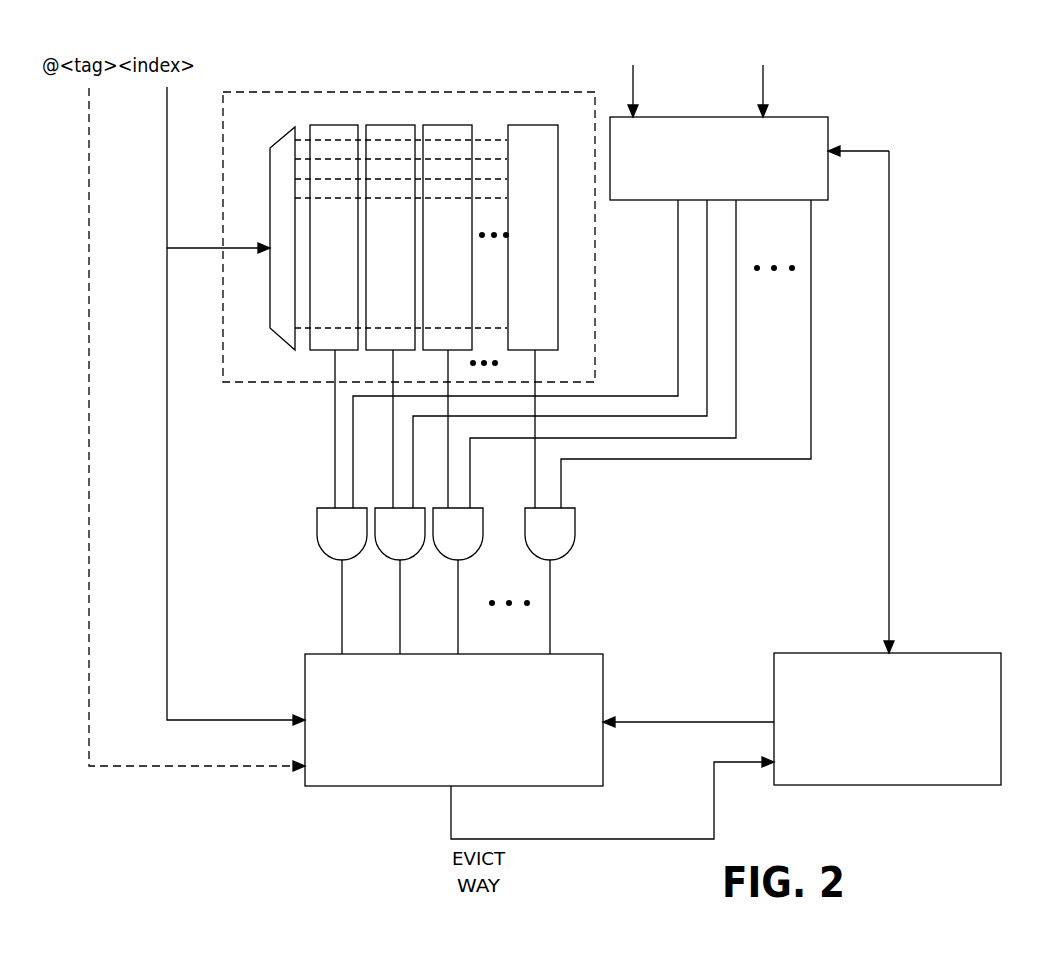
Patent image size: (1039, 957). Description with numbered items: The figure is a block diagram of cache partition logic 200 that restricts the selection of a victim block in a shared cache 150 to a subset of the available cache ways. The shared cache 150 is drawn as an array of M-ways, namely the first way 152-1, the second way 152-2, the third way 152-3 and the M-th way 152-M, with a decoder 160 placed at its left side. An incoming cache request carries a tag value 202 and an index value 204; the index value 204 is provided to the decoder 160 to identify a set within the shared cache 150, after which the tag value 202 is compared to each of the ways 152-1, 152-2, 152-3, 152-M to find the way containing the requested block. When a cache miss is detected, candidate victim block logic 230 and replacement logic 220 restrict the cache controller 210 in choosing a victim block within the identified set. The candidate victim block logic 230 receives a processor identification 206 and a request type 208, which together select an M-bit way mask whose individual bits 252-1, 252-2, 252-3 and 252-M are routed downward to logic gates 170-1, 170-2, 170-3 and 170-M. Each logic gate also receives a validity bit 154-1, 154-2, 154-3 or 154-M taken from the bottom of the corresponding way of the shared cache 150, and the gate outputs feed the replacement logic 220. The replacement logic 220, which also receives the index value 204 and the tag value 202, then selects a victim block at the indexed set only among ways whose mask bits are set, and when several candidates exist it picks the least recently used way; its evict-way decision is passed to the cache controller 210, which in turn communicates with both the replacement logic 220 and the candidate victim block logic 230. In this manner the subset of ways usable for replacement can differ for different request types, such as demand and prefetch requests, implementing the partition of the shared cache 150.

The shared cache 150 is at (265, 375).
The way W1 152-1 is at (329, 125).
The way W2 152-2 is at (389, 125).
The way W3 152-3 is at (451, 125).
The way WM 152-M is at (534, 125).
The validity bit 154-1 is at (340, 359).
The validity bit 154-2 is at (398, 359).
The validity bit 154-3 is at (453, 359).
The validity bit 154-M is at (540, 359).
The decoder 160 is at (285, 134).
The logic gate 170-1 is at (350, 562).
The logic gate 170-2 is at (408, 562).
The logic gate 170-3 is at (470, 556).
The logic gate 170-M is at (566, 556).
The cache partition logic 200 is at (905, 828).
The tag value 202 is at (94, 146).
The index value 204 is at (172, 146).
The processor identification (CPU_ID) 206 is at (628, 90).
The request type (REQ_TYPE) 208 is at (758, 90).
The cache controller 210 is at (897, 737).
The replacement logic 220 is at (466, 756).
The candidate victim block logic 230 is at (817, 155).
The bit of M-bit way mask 252-1 is at (683, 243).
The bit of M-bit way mask 252-2 is at (712, 259).
The bit of M-bit way mask 252-3 is at (741, 284).
The bit of M-bit way mask 252-M is at (806, 340).